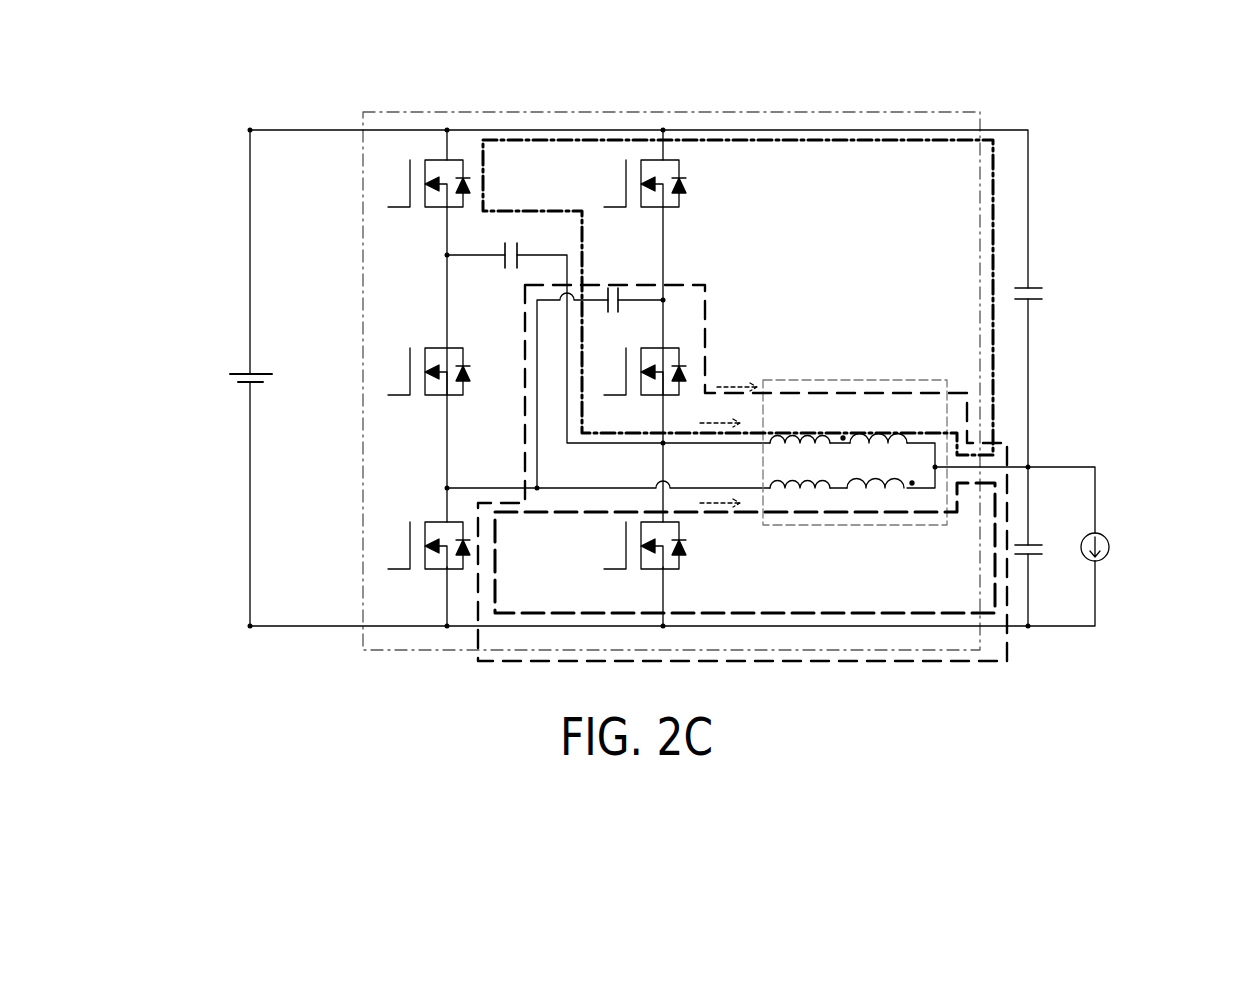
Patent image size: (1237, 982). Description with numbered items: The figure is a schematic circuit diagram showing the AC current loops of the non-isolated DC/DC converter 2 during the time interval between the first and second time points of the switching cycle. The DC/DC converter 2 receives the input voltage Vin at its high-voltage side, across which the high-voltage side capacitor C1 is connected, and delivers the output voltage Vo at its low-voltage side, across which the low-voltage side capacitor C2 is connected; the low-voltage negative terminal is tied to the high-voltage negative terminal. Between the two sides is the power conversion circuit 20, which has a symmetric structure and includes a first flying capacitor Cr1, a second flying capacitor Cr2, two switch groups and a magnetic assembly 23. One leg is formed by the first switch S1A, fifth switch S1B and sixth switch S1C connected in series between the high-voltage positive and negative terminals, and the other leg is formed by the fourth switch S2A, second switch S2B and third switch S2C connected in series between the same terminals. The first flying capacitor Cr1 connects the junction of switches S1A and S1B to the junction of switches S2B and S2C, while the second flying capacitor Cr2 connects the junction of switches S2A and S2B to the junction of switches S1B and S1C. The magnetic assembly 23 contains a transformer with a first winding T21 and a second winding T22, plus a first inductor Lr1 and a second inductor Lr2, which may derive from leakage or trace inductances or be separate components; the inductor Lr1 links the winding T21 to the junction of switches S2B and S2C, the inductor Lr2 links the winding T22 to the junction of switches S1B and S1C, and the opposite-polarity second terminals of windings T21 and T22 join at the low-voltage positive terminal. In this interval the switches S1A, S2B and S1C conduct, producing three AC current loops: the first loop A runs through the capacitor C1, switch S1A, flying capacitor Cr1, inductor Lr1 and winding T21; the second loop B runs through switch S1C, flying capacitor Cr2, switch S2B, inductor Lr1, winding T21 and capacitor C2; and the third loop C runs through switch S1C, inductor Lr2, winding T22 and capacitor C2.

The DC/DC converter 2 is at (1225, 75).
The power conversion circuit 20 is at (660, 112).
The magnetic assembly 23 is at (855, 435).
The first AC current loop A is at (955, 140).
The second AC current loop B is at (1007, 443).
The third AC current loop C is at (957, 614).
The first switch S1A is at (421, 205).
The fifth switch S1B is at (421, 391).
The sixth switch S1C is at (421, 565).
The fourth switch S2A is at (637, 205).
The second switch S2B is at (637, 391).
The third switch S2C is at (637, 565).
The first flying capacitor Cr1 is at (516, 243).
The second flying capacitor Cr2 is at (620, 315).
The high-voltage side capacitor C1 is at (1043, 279).
The low-voltage side capacitor C2 is at (1043, 534).
The first inductor Lr1 is at (800, 422).
The second inductor Lr2 is at (800, 467).
The first winding T21 is at (874, 422).
The second winding T22 is at (880, 471).
The input voltage Vin is at (231, 371).
The output voltage Vo is at (1117, 540).